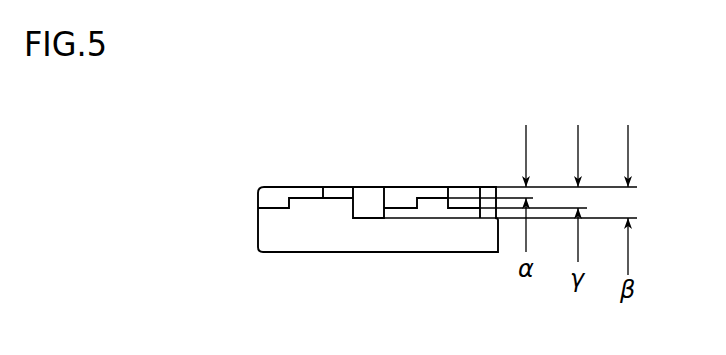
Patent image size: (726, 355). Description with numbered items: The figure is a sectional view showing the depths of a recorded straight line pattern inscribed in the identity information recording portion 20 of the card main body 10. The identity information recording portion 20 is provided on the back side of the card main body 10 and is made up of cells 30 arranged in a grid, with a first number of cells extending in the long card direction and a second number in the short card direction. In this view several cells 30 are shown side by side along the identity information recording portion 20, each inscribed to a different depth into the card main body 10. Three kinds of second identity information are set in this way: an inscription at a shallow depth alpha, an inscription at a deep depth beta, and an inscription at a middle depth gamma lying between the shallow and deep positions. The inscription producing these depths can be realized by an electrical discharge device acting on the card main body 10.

The card main body 10 is at (383, 253).
The identity information recording portion 20 is at (322, 184).
The cells 30 is at (367, 186).